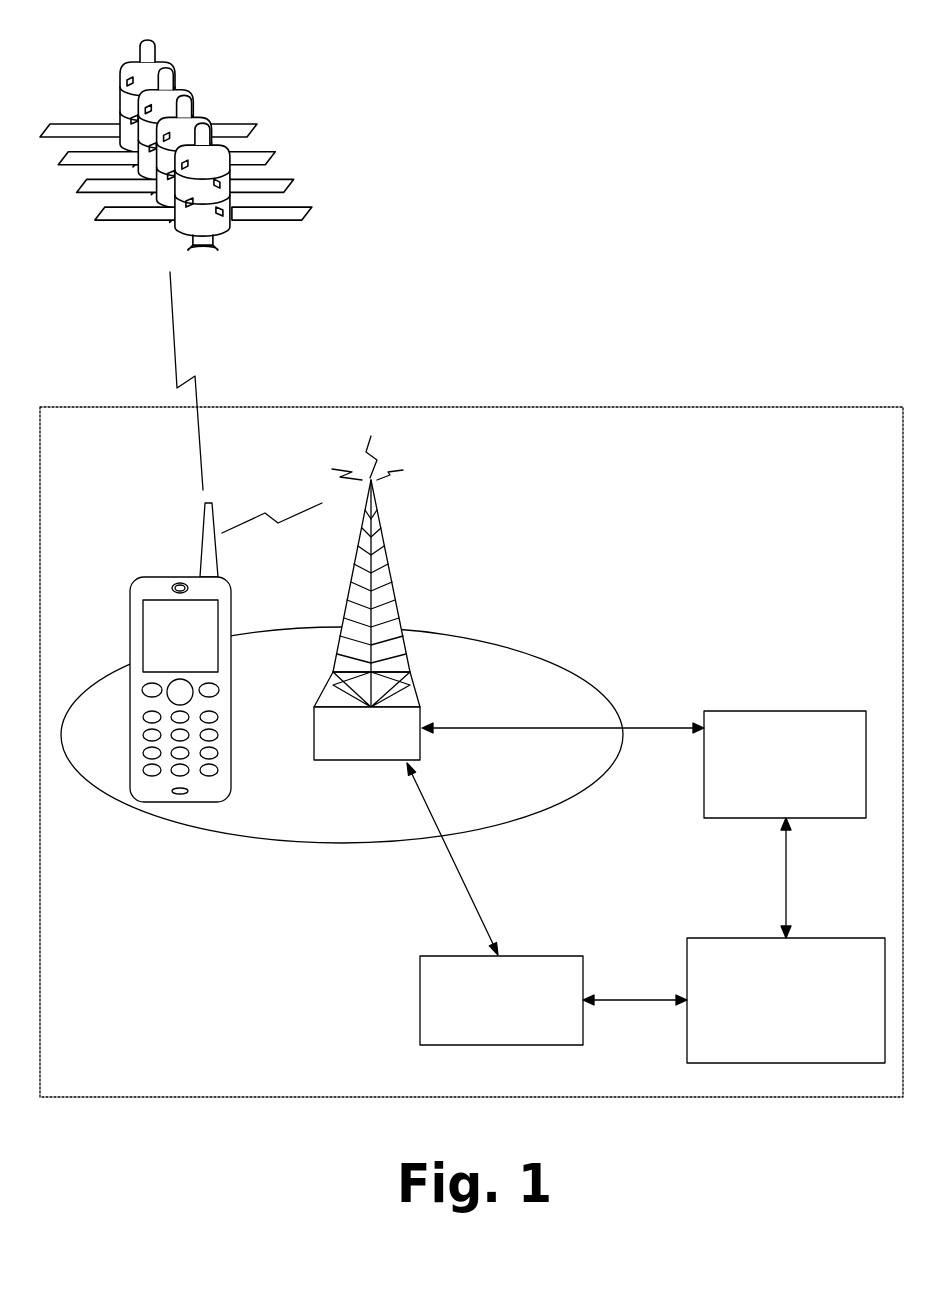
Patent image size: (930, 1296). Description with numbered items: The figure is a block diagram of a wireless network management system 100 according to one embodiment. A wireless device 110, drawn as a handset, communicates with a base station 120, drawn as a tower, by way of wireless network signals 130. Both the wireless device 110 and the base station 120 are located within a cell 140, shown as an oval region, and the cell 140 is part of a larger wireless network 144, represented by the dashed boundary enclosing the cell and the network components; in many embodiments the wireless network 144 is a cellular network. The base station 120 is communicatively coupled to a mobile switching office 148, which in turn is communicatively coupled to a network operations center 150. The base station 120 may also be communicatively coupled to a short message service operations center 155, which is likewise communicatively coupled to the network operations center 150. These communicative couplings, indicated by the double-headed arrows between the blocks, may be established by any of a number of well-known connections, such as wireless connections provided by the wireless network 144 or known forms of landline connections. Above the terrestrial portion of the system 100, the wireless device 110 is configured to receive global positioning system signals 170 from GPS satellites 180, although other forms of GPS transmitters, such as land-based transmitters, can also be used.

The wireless network management system 100 is at (778, 34).
The wireless device 110 is at (180, 803).
The base station 120 is at (392, 582).
The wireless network signals 130 is at (278, 523).
The cell 140 is at (552, 660).
The wireless network 144 is at (588, 407).
The mobile switching office 148 is at (704, 763).
The network operations center 150 is at (687, 950).
The short message service operations center 155 is at (420, 996).
The global positioning system signals 170 is at (195, 376).
The GPS satellites 180 is at (142, 39).